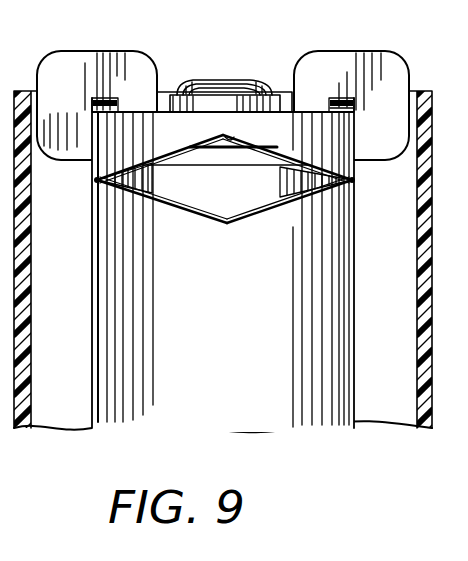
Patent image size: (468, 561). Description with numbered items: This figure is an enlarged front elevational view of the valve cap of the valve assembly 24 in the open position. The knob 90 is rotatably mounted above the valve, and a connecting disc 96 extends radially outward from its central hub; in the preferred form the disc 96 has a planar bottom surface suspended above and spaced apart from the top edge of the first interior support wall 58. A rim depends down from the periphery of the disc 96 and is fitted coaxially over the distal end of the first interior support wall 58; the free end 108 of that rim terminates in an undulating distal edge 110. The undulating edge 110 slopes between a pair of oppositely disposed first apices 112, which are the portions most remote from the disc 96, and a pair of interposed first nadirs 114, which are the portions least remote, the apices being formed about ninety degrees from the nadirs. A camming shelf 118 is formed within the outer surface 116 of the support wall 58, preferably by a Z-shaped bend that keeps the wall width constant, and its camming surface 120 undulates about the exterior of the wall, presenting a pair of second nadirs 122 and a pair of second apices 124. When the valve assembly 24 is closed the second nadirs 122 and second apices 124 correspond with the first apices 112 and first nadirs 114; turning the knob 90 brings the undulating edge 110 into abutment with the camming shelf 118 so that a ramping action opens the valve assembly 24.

The valve assembly 24 is at (253, 70).
The first interior support wall 58 is at (277, 170).
The knob 90 is at (213, 118).
The connecting disc 96 is at (163, 110).
The free end of rim 108 is at (97, 176).
The undulating distal edge 110 is at (197, 147).
The first apices 112 is at (95, 179).
The first nadirs 114 is at (234, 136).
The outer surface of interior support wall 116 is at (147, 205).
The camming shelf 118 is at (163, 191).
The camming surface 120 is at (353, 173).
The second nadirs 122 is at (227, 224).
The second apices 124 is at (95, 184).